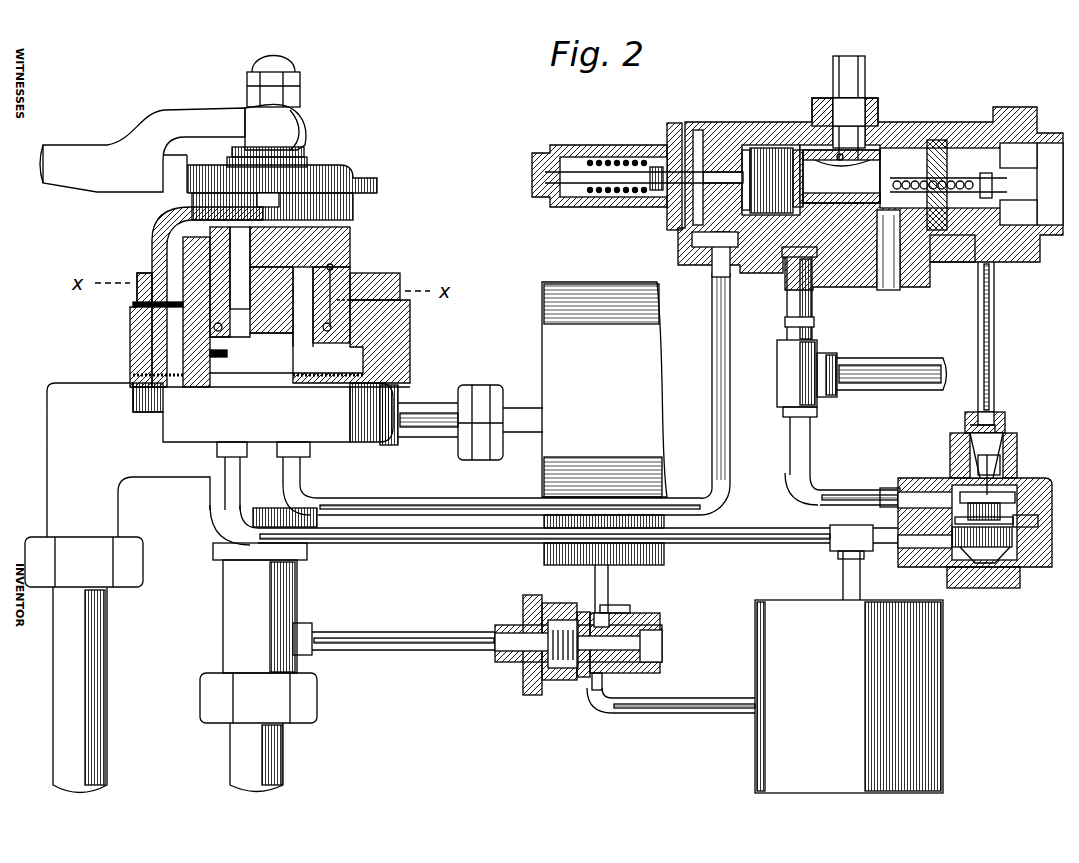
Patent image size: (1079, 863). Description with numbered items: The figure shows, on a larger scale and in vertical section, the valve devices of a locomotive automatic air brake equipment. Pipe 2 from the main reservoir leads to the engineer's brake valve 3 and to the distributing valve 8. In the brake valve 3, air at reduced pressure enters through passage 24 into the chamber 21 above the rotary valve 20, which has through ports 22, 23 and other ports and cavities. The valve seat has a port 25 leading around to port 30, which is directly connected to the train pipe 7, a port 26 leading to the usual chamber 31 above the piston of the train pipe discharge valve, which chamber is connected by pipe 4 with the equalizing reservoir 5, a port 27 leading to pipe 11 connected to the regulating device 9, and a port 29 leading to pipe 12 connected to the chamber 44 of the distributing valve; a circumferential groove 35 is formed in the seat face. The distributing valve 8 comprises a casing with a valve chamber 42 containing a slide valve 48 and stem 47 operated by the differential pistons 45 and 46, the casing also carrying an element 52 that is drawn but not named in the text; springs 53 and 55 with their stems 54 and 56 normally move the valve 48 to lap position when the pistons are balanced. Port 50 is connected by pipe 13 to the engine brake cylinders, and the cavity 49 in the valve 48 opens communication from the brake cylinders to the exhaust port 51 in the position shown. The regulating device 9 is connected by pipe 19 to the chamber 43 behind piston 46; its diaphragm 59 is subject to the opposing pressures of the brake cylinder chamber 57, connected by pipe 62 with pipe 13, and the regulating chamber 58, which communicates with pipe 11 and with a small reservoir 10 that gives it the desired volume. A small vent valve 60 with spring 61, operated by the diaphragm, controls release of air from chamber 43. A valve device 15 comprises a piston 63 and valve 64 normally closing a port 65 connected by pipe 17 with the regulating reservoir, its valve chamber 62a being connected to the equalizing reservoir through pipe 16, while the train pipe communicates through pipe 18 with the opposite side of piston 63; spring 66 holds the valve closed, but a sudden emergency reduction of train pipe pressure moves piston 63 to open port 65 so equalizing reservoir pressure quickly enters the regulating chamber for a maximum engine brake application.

The pipe 2 is at (852, 75).
The engineer's brake valve 3 is at (208, 125).
The pipe 4 is at (443, 403).
The equalizing reservoir 5 is at (551, 369).
The train pipe 7 is at (268, 749).
The distributing valve 8 is at (870, 184).
The regulating device 9 is at (975, 510).
The small reservoir 10 is at (937, 670).
The pipe 11 is at (348, 537).
The pipe 12 is at (448, 500).
The pipe 13 is at (888, 365).
The valve device 15 is at (578, 610).
The pipe 16 is at (608, 582).
The pipe 17 is at (683, 708).
The pipe 18 is at (420, 650).
The pipe 19 is at (994, 351).
The rotary valve 20 is at (328, 241).
The chamber 21 is at (350, 215).
The through port 22 is at (237, 243).
The through port 23 is at (215, 255).
The passage 24 is at (170, 288).
The port 25 is at (205, 307).
The port 26 is at (207, 277).
The port 27 is at (202, 333).
The port 29 is at (400, 325).
The port 30 is at (400, 352).
The chamber 31 is at (230, 373).
The circumferential groove 35 is at (337, 265).
The valve chamber 42 is at (872, 138).
The chamber 43 is at (1033, 142).
The chamber 44 is at (675, 133).
The differential piston 45 is at (742, 148).
The differential piston 46 is at (933, 140).
The stem 47 is at (812, 175).
The valve 48 is at (771, 180).
The cavity 49 is at (845, 210).
The port 50 is at (815, 255).
The exhaust port 51 is at (882, 252).
The bolt 52 is at (735, 150).
The spring 53 is at (610, 190).
The stem 54 is at (677, 182).
The spring 55 is at (948, 263).
The stem 56 is at (955, 196).
The brake cylinder chamber 57 is at (958, 500).
The regulating chamber 58 is at (1000, 590).
The diaphragm 59 is at (1040, 520).
The vent valve 60 is at (1017, 472).
The spring 61 is at (955, 453).
The pipe 62 is at (842, 497).
The valve chamber 62a is at (623, 630).
The piston 63 is at (548, 680).
The valve 64 is at (593, 680).
The port 65 is at (610, 672).
The spring 66 is at (533, 640).